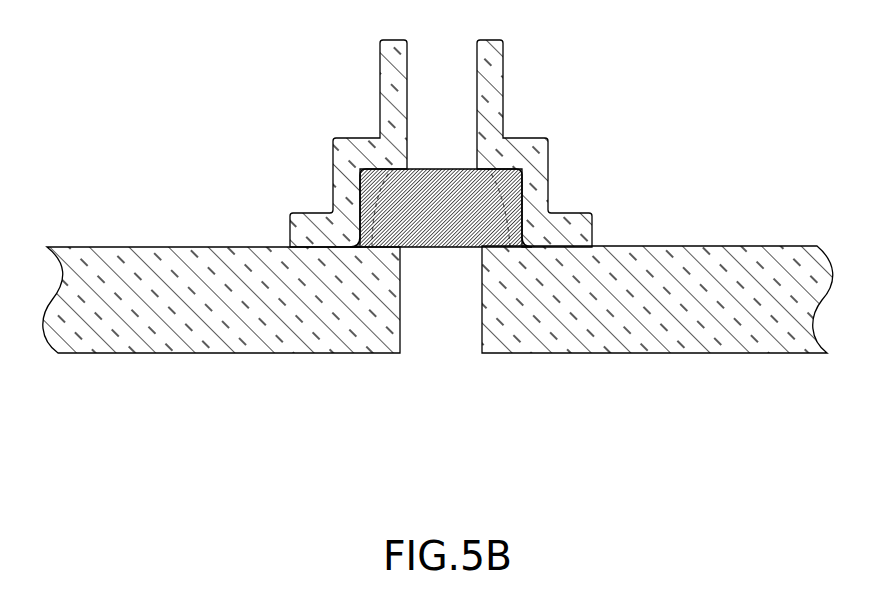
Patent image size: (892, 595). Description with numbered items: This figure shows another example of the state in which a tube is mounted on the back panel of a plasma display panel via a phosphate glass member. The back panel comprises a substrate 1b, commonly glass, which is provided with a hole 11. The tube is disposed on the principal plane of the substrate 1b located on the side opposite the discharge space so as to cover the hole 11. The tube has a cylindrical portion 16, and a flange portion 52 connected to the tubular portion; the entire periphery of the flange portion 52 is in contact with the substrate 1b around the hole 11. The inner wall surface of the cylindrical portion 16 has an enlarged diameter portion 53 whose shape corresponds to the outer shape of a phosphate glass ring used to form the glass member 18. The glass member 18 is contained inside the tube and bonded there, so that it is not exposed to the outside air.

The substrate 1b is at (688, 343).
The hole 11 is at (437, 333).
The cylindrical portion 16 is at (492, 77).
The glass member 18 is at (483, 202).
The flange portion 52 is at (570, 228).
The enlarged diameter portion 53 is at (340, 182).